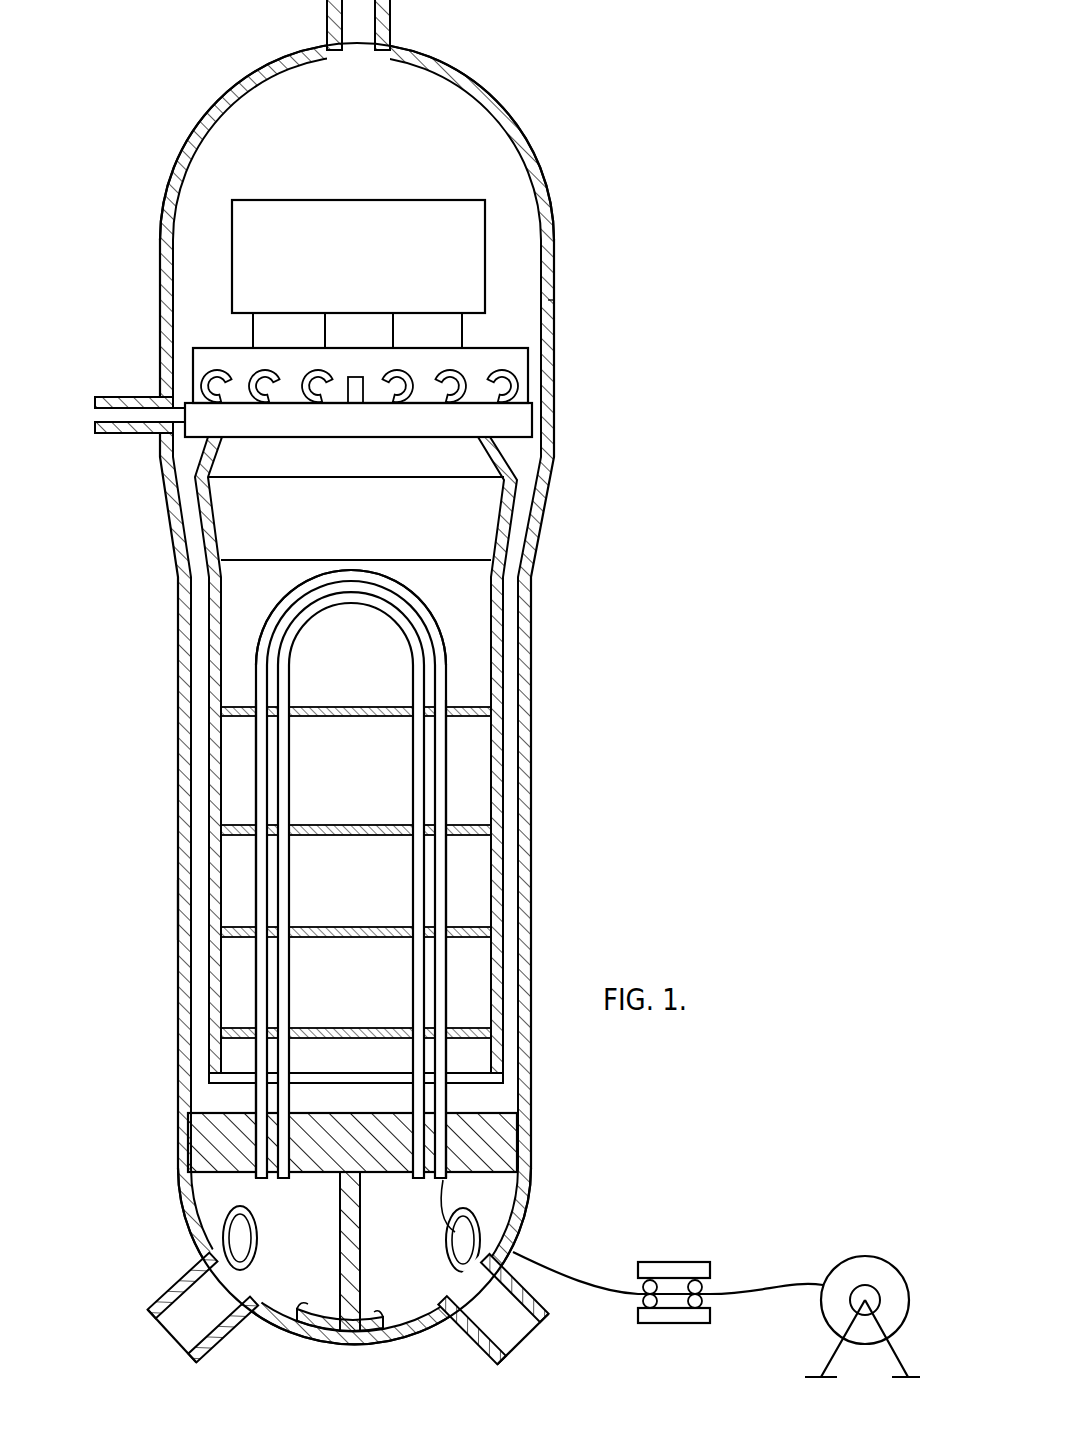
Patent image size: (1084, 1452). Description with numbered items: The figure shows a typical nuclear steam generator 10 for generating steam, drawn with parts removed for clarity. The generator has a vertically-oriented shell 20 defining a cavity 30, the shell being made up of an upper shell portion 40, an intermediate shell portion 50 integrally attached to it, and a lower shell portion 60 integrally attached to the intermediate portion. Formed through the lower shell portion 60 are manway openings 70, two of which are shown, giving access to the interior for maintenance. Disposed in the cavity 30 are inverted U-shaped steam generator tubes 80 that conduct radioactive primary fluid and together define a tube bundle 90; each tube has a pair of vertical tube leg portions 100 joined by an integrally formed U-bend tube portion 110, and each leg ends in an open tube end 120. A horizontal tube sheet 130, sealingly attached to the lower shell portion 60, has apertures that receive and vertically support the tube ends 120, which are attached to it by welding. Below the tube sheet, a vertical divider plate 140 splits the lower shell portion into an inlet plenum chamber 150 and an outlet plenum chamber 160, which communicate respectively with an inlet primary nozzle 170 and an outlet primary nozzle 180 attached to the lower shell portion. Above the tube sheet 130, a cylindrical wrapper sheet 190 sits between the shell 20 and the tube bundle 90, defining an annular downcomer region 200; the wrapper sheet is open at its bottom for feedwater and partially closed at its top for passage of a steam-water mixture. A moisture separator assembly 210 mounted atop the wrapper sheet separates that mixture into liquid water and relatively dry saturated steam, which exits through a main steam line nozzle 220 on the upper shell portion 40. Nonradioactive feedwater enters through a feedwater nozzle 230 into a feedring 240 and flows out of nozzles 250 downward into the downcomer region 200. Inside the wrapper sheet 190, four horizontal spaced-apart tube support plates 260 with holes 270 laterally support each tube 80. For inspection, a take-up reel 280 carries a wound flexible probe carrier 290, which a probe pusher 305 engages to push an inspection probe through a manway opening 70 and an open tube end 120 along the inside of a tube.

The nuclear steam generator 10 is at (602, 196).
The shell 20 is at (540, 160).
The cavity 30 is at (535, 243).
The upper shell portion 40 is at (548, 298).
The intermediate shell portion 50 is at (525, 638).
The lower shell portion 60 is at (520, 1186).
The manway openings 70 is at (462, 1225).
The U-shaped steam generator tubes 80 is at (443, 750).
The tube bundle 90 is at (420, 798).
The tube leg portions 100 is at (258, 873).
The U-bend tube portion 110 is at (262, 638).
The open tube end 120 is at (255, 1180).
The tube sheet 130 is at (190, 1115).
The divider plate 140 is at (348, 1245).
The inlet plenum chamber 150 is at (300, 1326).
The outlet plenum chamber 160 is at (375, 1336).
The inlet primary nozzle 170 is at (172, 1285).
The outlet primary nozzle 180 is at (490, 1352).
The wrapper sheet 190 is at (215, 1003).
The downcomer region 200 is at (195, 905).
The moisture separator assembly 210 is at (224, 265).
The main steam line nozzle 220 is at (390, 17).
The feedwater nozzle 230 is at (140, 440).
The feedring 240 is at (195, 412).
The nozzles 250 is at (200, 372).
The tube support plates 260 is at (212, 822).
The holes 270 is at (240, 712).
The take-up reel 280 is at (848, 1265).
The probe carrier 290 is at (735, 1294).
The probe pusher 305 is at (668, 1262).